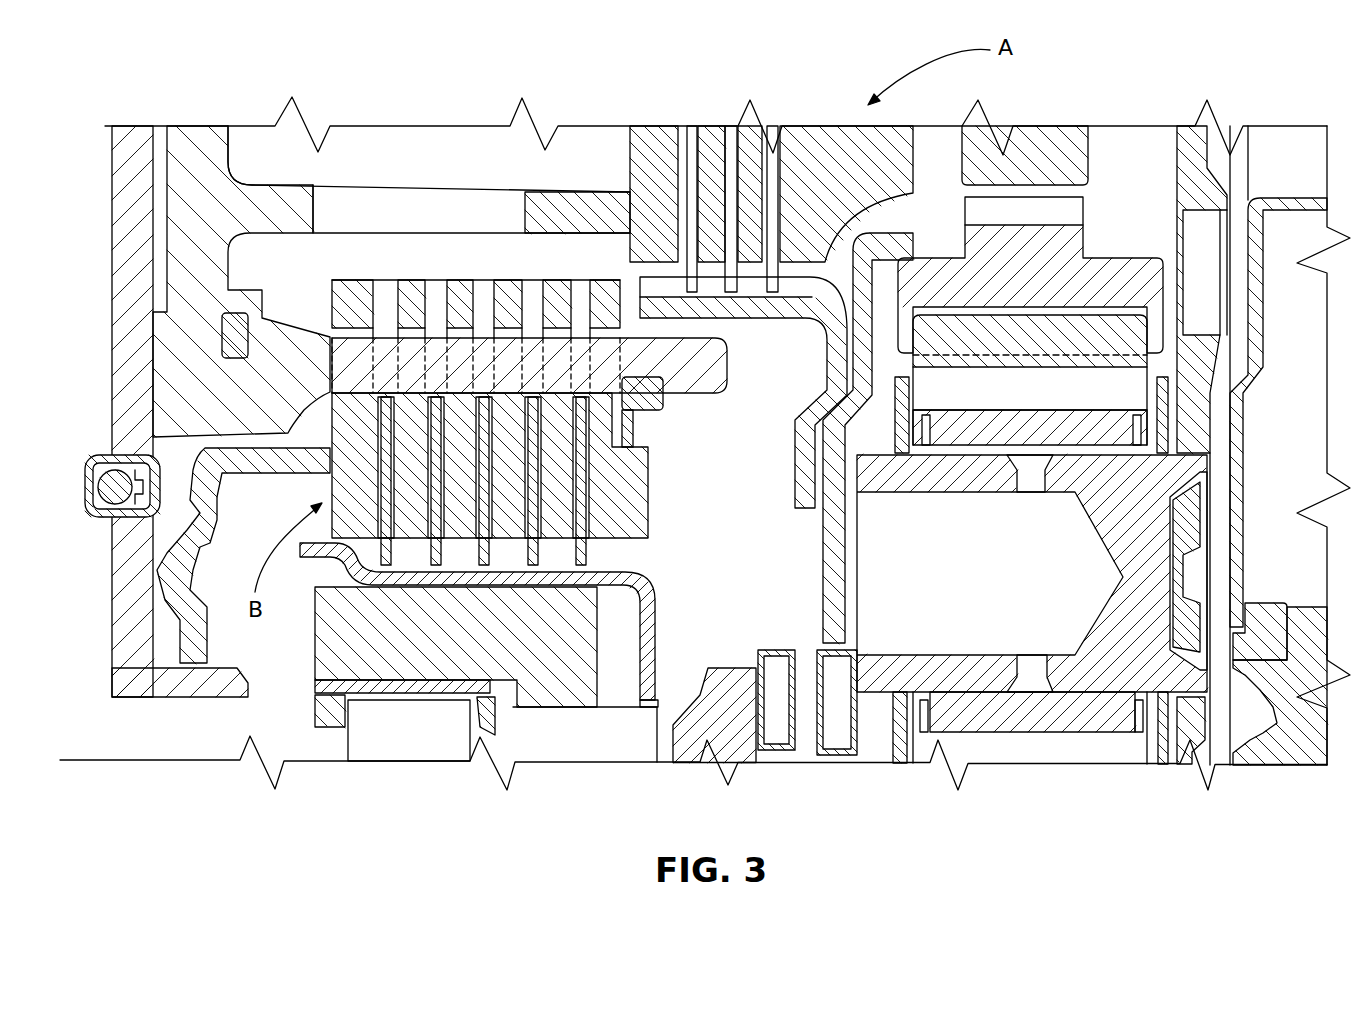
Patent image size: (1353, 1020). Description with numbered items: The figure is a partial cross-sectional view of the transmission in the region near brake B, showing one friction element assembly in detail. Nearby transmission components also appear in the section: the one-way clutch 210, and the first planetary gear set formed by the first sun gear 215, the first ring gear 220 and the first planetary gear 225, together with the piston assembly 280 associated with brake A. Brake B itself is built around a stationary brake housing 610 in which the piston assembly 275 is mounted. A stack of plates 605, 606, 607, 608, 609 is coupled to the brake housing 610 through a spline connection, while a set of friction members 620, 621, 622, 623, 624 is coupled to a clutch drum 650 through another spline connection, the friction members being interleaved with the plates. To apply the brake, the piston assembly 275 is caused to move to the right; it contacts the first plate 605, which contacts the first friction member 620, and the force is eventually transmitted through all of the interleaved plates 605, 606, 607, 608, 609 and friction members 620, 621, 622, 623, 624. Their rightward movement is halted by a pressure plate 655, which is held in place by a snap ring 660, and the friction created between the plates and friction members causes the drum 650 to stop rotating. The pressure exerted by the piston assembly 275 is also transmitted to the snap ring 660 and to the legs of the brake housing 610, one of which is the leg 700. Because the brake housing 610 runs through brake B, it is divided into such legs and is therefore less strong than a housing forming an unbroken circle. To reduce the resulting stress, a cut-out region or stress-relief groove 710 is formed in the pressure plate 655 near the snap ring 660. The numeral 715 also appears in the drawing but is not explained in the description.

The one-way clutch 210 is at (315, 650).
The first sun gear 215 is at (1097, 722).
The first ring gear 220 is at (1087, 237).
The first planetary gear 225 is at (1000, 680).
The piston assembly 275 is at (155, 520).
The piston assembly 280 is at (262, 185).
The plate 605 is at (347, 280).
The plate 606 is at (402, 280).
The plate 607 is at (453, 280).
The plate 608 is at (502, 280).
The plate 609 is at (557, 280).
The brake housing 610 is at (112, 356).
The friction member 620 is at (387, 565).
The friction member 621 is at (436, 565).
The friction member 622 is at (484, 565).
The friction member 623 is at (533, 565).
The friction member 624 is at (581, 565).
The clutch drum 650 is at (658, 637).
The pressure plate 655 is at (648, 490).
The snap ring 660 is at (663, 406).
The leg 700 is at (728, 365).
The stress-relief groove 710 is at (640, 432).
The end plate 715 is at (622, 377).